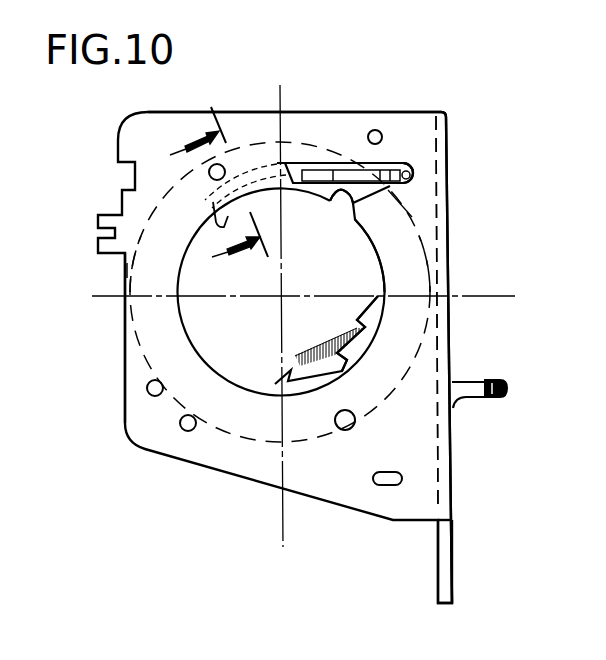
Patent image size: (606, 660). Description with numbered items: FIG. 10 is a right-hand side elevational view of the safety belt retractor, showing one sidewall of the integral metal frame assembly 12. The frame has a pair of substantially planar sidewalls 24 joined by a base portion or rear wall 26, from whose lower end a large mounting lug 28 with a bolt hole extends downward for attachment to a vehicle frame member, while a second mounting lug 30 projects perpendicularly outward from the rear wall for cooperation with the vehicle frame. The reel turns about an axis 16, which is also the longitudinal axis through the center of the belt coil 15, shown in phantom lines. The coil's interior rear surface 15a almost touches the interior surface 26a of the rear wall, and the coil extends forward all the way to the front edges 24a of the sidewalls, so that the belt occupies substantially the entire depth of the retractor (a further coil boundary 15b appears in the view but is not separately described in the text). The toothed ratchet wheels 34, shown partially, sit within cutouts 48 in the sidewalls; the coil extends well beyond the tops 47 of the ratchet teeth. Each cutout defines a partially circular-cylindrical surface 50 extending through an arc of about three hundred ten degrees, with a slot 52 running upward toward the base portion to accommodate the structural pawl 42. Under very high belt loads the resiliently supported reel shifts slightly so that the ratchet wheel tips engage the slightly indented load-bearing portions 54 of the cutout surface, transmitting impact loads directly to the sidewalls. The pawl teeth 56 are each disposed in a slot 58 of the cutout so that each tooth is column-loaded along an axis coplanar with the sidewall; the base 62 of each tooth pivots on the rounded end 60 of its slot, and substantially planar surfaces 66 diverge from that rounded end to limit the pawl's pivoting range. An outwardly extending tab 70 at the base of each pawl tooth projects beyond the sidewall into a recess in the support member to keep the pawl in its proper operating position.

The frame assembly 12 is at (210, 199).
The coil 15 is at (226, 443).
The interior rear surface 15a is at (438, 280).
The bolt circle left portion 15b is at (128, 270).
The axis 16 is at (283, 292).
The sidewalls 24 is at (419, 449).
The front edges 24a is at (125, 368).
The rear wall 26 is at (456, 467).
The interior surface 26a is at (452, 348).
The mounting lug 28 is at (457, 563).
The second mounting lug 30 is at (497, 380).
The ratchet wheels 34 is at (330, 331).
The structural pawl 42 is at (394, 170).
The tops of the teeth 47 is at (367, 340).
The cutouts 48 is at (386, 233).
The partially circular-cylindrical surface 50 is at (189, 340).
The slot 52 is at (320, 162).
The load-bearing portions 54 is at (220, 228).
The pawl teeth 56 is at (390, 170).
The slot 58 is at (390, 187).
The rounded end 60 is at (413, 171).
The base 62 is at (412, 179).
The planar surfaces 66 is at (360, 86).
The tab 70 is at (412, 166).